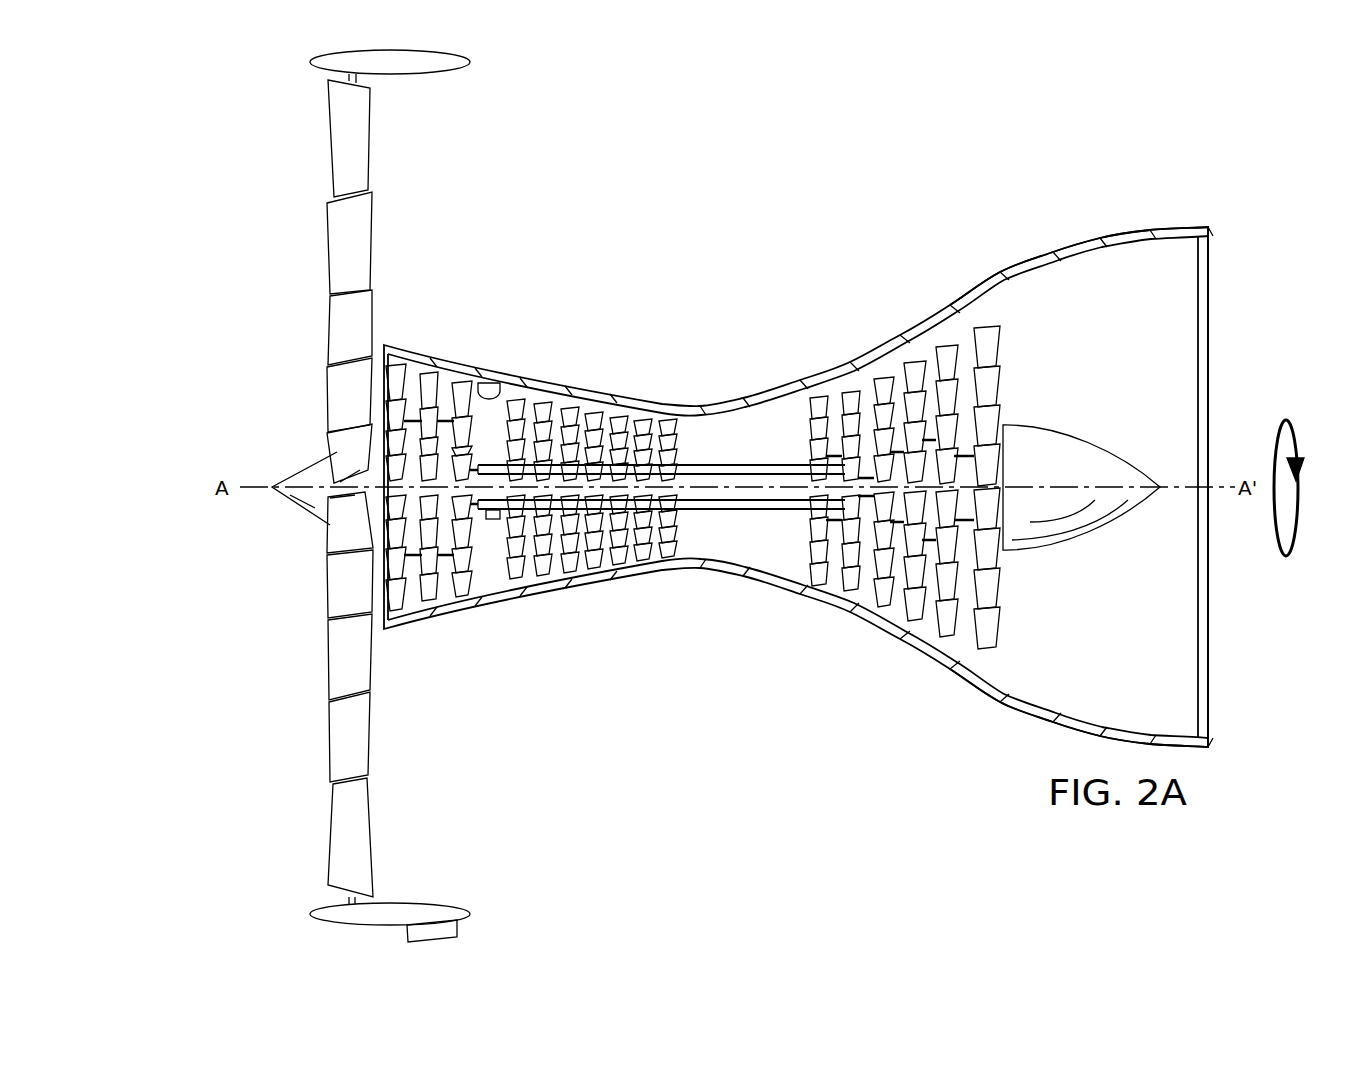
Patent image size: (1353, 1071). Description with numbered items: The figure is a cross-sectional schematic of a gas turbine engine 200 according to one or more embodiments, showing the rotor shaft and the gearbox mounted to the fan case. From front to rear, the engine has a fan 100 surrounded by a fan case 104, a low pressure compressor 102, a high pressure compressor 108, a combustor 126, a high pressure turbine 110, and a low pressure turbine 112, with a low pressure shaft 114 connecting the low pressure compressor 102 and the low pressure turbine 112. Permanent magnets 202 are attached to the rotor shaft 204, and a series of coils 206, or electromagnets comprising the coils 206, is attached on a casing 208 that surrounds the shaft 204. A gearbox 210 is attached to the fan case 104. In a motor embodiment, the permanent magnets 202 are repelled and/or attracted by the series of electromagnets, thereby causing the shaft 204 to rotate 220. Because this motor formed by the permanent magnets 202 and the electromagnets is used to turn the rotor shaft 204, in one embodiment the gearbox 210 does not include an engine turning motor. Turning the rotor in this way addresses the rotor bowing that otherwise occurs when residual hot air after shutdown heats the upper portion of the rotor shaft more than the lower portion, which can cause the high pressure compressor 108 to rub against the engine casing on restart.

The gas turbine engine 200 is at (1152, 77).
The fan 100 is at (330, 255).
The fan case 104 is at (400, 66).
The low pressure compressor 102 is at (470, 644).
The high pressure compressor 108 is at (675, 400).
The high pressure turbine 110 is at (820, 392).
The low pressure turbine 112 is at (950, 347).
The low pressure shaft 114 is at (724, 505).
The combustor 126 is at (750, 406).
The permanent magnets 202 is at (492, 519).
The rotor shaft 204 is at (752, 508).
The coils 206 is at (486, 383).
The casing 208 is at (1020, 274).
The gearbox 210 is at (463, 924).
The rotation of the shaft 220 is at (1288, 418).